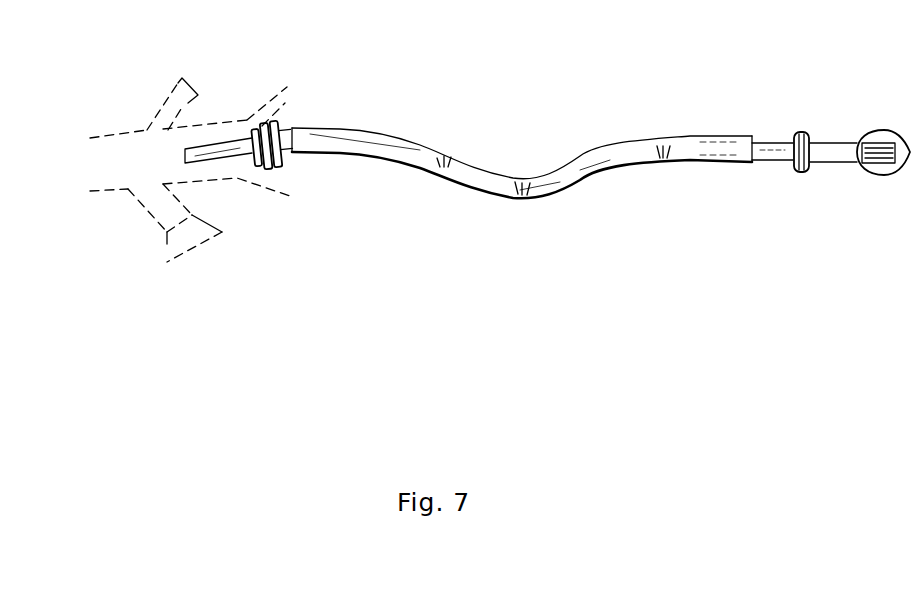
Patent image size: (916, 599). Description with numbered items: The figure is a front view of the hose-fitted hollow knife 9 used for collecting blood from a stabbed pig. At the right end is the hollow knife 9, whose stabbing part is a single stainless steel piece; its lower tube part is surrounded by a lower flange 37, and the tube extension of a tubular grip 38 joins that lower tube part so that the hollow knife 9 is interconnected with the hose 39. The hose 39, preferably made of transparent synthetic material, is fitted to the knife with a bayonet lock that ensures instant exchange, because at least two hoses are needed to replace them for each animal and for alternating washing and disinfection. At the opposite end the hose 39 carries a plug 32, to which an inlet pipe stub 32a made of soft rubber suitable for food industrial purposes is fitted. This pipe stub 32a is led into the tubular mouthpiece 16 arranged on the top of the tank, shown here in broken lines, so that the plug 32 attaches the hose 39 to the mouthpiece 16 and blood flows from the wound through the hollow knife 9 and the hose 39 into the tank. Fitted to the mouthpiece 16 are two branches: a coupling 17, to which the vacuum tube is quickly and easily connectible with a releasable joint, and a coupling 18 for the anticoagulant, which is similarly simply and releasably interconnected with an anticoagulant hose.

The hollow knife 9 is at (837, 147).
The tubular mouthpiece 16 is at (283, 103).
The coupling 17 is at (167, 255).
The coupling 18 is at (182, 86).
The plug 32 is at (285, 157).
The inlet pipe stub 32a is at (237, 150).
The lower flange 37 is at (793, 163).
The tubular grip 38 is at (775, 147).
The hose 39 is at (513, 177).